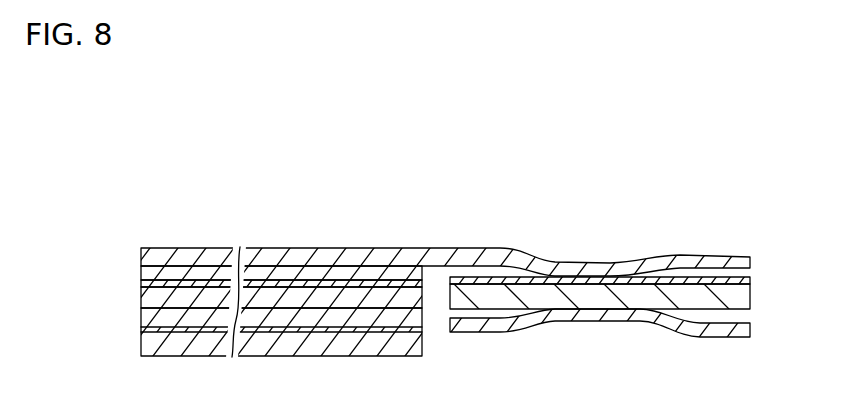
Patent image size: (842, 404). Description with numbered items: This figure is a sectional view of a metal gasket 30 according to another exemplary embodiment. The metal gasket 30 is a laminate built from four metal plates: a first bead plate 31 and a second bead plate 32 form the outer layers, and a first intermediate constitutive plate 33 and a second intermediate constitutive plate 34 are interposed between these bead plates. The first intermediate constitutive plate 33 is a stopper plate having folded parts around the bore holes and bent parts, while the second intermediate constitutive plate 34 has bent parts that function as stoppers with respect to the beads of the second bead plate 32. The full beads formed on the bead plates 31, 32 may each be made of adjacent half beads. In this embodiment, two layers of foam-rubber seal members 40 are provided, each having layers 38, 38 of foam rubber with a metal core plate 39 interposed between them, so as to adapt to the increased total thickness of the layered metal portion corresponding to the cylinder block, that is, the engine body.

The metal gasket 30 is at (421, 264).
The first bead plate 31 is at (752, 262).
The second bead plate 32 is at (732, 330).
The first intermediate constitutive plate 33 is at (752, 281).
The second intermediate constitutive plate 34 is at (733, 300).
The layer of foam rubber 38 is at (144, 251).
The metal core plate 39 is at (154, 283).
The foam-rubber seal member 40 is at (140, 353).